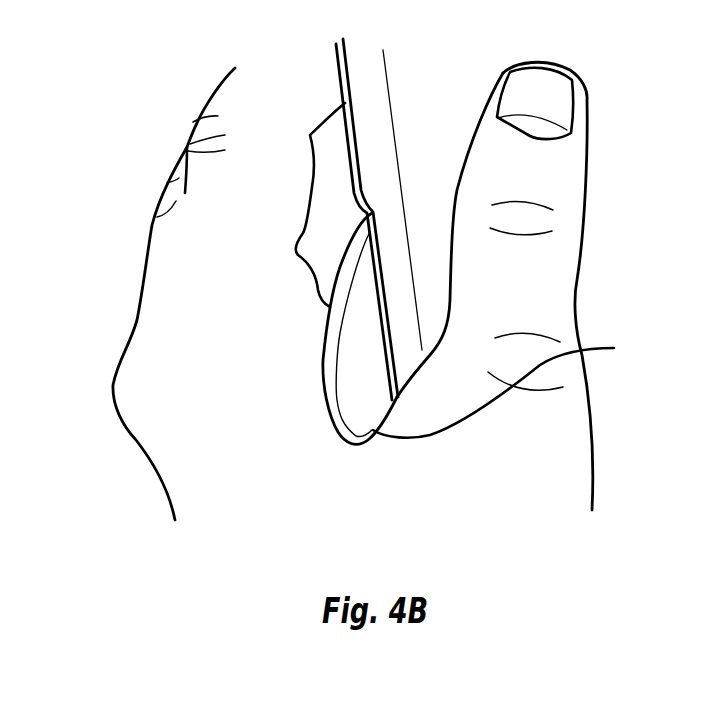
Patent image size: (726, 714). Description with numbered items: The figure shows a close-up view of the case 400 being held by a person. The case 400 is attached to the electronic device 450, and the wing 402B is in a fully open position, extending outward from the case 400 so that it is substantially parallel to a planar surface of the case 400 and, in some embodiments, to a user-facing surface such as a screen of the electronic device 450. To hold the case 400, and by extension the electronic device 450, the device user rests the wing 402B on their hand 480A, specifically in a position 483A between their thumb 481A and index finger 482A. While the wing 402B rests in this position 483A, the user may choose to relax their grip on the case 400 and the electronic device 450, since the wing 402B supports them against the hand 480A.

The case 400 is at (324, 55).
The electronic device 450 is at (418, 86).
The wing 402B is at (355, 373).
The hand 480A is at (290, 492).
The thumb 481A is at (557, 213).
The index finger 482A is at (187, 147).
The position 483A is at (517, 385).